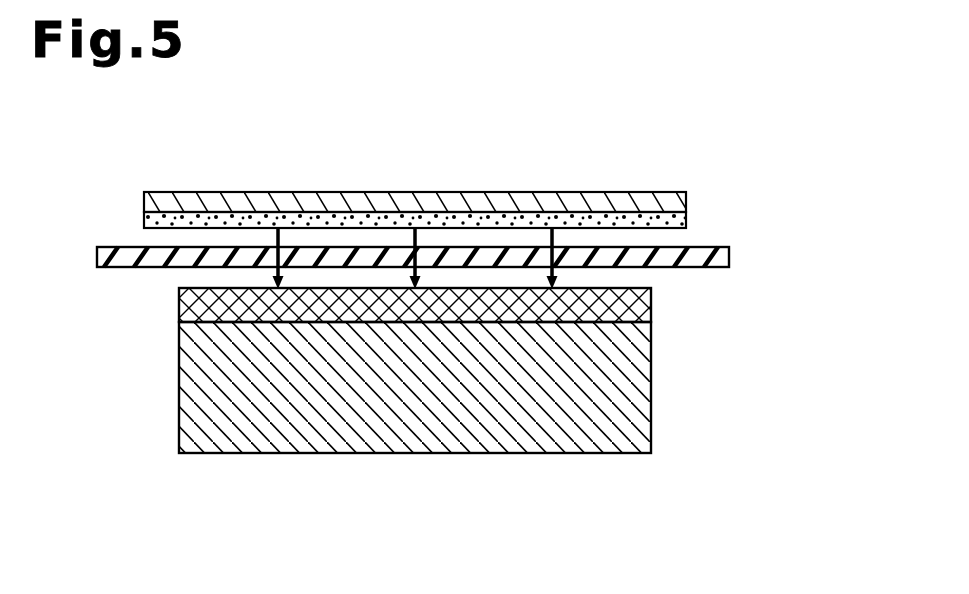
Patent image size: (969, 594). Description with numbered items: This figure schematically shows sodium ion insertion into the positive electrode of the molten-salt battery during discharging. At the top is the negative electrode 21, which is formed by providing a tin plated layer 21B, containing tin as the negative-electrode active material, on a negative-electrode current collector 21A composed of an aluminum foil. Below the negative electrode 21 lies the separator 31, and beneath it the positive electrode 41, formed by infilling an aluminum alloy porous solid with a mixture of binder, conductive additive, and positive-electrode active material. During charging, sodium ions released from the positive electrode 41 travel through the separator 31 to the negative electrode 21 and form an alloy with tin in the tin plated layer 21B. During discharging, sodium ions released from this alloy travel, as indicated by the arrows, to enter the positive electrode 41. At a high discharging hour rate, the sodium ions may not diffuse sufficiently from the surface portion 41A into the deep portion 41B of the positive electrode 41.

The negative electrode 21 is at (506, 181).
The negative-electrode current collector 21A is at (733, 167).
The tin plated layer 21B is at (805, 206).
The separator 31 is at (790, 258).
The positive electrode 41 is at (523, 370).
The surface portion 41A is at (722, 320).
The deep portion 41B is at (803, 385).